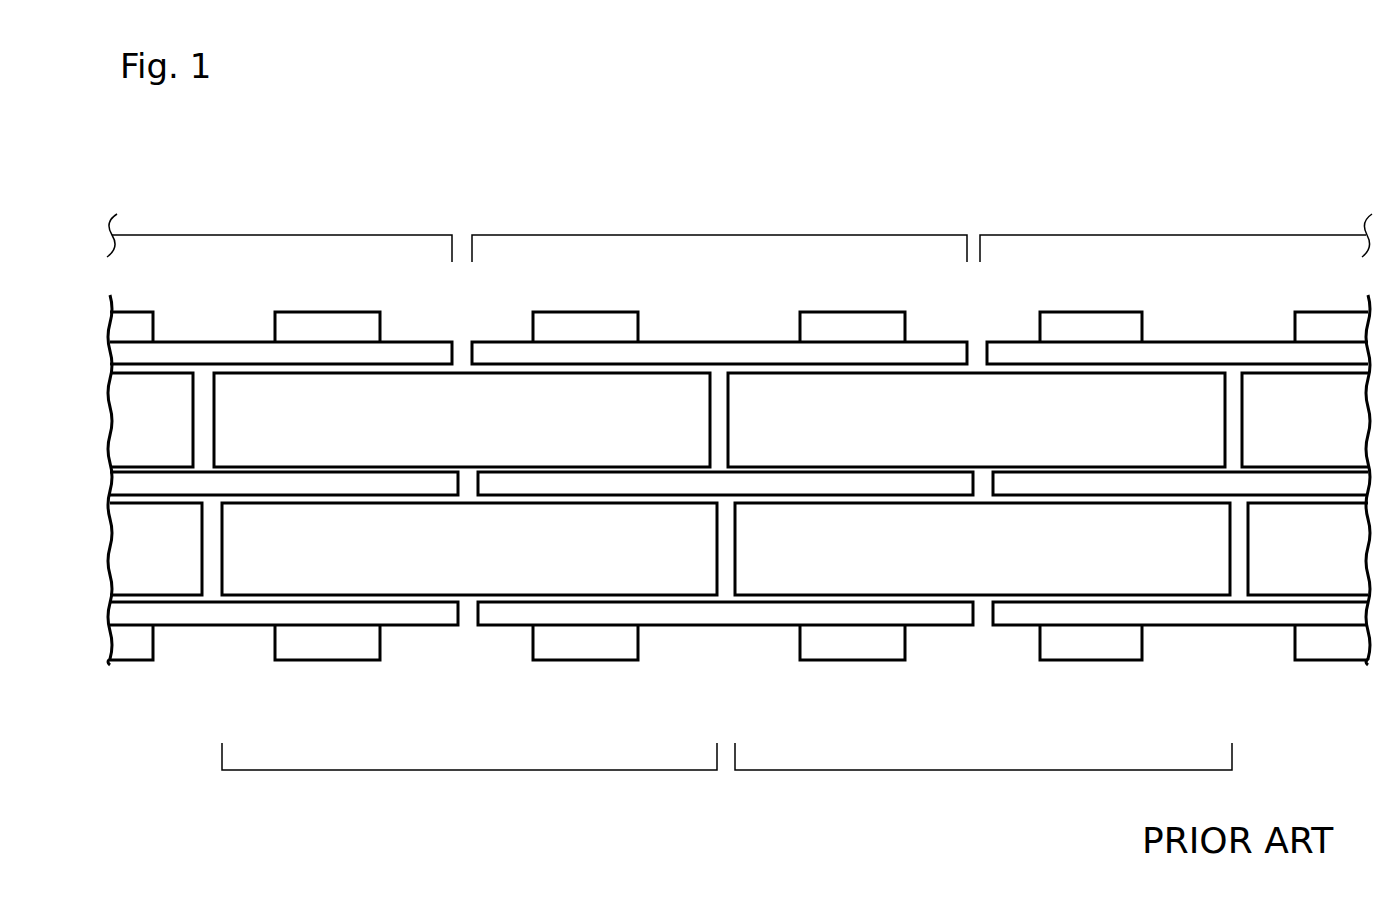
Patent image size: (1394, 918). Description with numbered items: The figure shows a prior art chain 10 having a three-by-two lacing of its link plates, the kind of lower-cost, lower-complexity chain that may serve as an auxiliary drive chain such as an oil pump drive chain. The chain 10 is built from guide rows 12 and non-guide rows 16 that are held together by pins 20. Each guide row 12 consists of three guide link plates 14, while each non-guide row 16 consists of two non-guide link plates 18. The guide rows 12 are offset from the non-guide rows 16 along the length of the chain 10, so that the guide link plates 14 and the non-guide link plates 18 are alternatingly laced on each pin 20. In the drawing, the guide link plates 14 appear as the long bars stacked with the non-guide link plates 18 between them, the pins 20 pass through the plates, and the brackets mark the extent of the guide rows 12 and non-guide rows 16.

The chain 10 is at (1238, 170).
The guide rows 12 is at (241, 235).
The guide link plates 14 is at (200, 353).
The non-guide rows 16 is at (470, 770).
The non-guide link plates 18 is at (739, 484).
The pins 20 is at (330, 328).